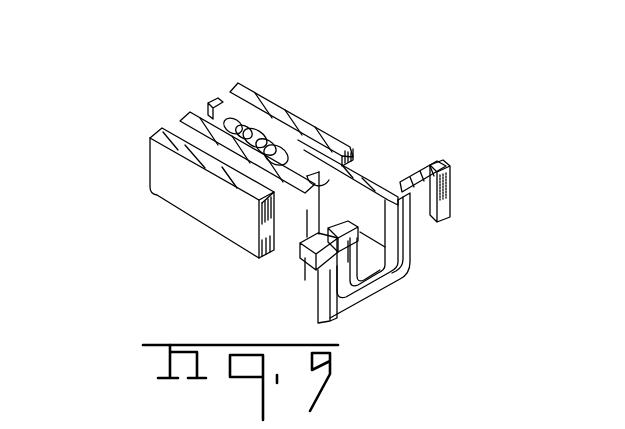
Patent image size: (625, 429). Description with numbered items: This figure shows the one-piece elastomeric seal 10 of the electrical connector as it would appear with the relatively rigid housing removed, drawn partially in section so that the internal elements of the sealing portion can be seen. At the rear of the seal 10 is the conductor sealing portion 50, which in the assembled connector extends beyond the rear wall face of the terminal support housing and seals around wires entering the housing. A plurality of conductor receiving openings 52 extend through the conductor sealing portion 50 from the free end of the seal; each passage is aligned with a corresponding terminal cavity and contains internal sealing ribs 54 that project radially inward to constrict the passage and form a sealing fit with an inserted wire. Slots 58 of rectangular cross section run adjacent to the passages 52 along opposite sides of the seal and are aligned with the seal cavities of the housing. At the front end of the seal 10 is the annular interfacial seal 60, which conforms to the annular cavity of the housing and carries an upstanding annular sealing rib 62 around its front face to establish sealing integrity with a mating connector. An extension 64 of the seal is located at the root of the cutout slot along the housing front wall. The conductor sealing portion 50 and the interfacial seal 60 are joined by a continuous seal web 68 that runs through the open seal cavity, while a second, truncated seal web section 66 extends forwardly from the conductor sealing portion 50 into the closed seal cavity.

The seal 10 is at (356, 113).
The conductor sealing portion 50 is at (158, 137).
The conductor receiving openings 52 is at (243, 122).
The sealing ribs 54 is at (210, 120).
The slots 58 is at (178, 122).
The interfacial seal 60 is at (450, 183).
The annular sealing rib 62 is at (425, 242).
The extension 64 is at (312, 252).
The truncated seal web section 66 is at (283, 223).
The seal web 68 is at (368, 174).